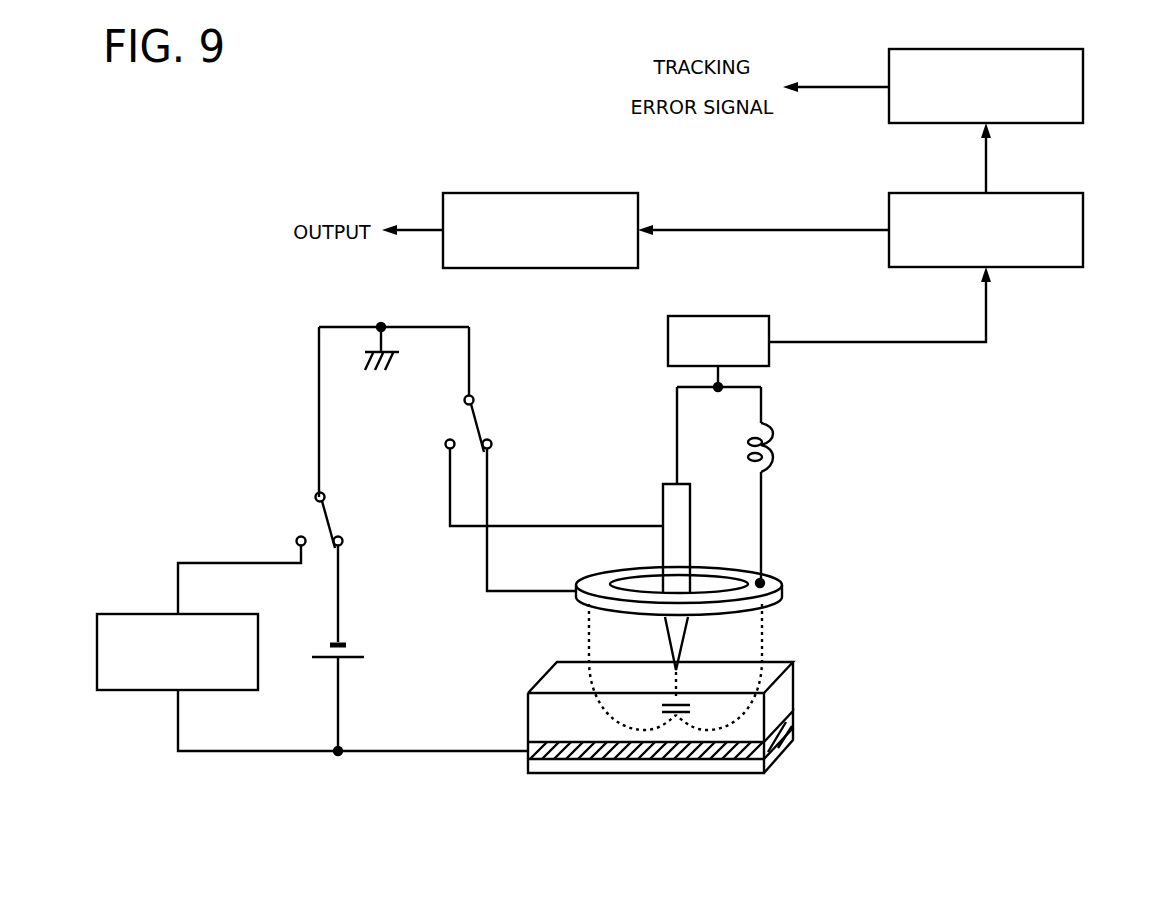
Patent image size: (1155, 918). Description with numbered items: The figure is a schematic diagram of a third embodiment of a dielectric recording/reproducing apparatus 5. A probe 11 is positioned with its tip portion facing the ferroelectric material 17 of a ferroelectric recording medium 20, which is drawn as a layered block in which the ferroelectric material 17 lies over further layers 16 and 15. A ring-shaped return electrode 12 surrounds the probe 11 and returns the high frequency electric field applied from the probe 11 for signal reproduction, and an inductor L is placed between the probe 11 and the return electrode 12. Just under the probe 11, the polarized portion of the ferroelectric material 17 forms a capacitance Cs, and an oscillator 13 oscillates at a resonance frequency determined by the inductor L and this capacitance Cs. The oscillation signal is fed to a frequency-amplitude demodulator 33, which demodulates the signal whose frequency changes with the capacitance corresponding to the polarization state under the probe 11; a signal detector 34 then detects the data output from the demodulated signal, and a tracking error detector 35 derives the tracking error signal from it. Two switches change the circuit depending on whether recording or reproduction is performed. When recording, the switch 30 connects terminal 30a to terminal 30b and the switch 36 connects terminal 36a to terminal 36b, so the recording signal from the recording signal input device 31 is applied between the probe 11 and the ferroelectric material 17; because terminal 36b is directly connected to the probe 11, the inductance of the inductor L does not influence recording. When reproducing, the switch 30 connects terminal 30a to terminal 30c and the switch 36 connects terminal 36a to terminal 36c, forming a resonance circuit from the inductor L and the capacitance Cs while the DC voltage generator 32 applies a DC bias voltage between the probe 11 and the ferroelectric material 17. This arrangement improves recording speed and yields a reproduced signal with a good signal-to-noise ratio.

The dielectric recording/reproducing apparatus 5 is at (731, 780).
The probe 11 is at (686, 632).
The return electrode 12 is at (784, 590).
The oscillator 13 is at (665, 346).
The electrode layer 15 is at (700, 750).
The ferroelectric recording layer 16 is at (793, 720).
The ferroelectric material 17 is at (787, 683).
The ferroelectric recording medium 20 is at (731, 716).
The switch 30 is at (319, 523).
The terminal 30a is at (315, 497).
The terminal 30b is at (296, 541).
The terminal 30c is at (343, 544).
The recording signal input device 31 is at (128, 612).
The DC voltage generator 32 is at (368, 650).
The frequency-amplitude demodulator 33 is at (1085, 227).
The signal detector 34 is at (562, 193).
The tracking error detector 35 is at (1085, 85).
The switch 36 is at (470, 427).
The terminal 36a is at (464, 400).
The terminal 36b is at (445, 444).
The terminal 36c is at (492, 447).
The inductor L is at (780, 451).
The capacitance Cs is at (697, 710).